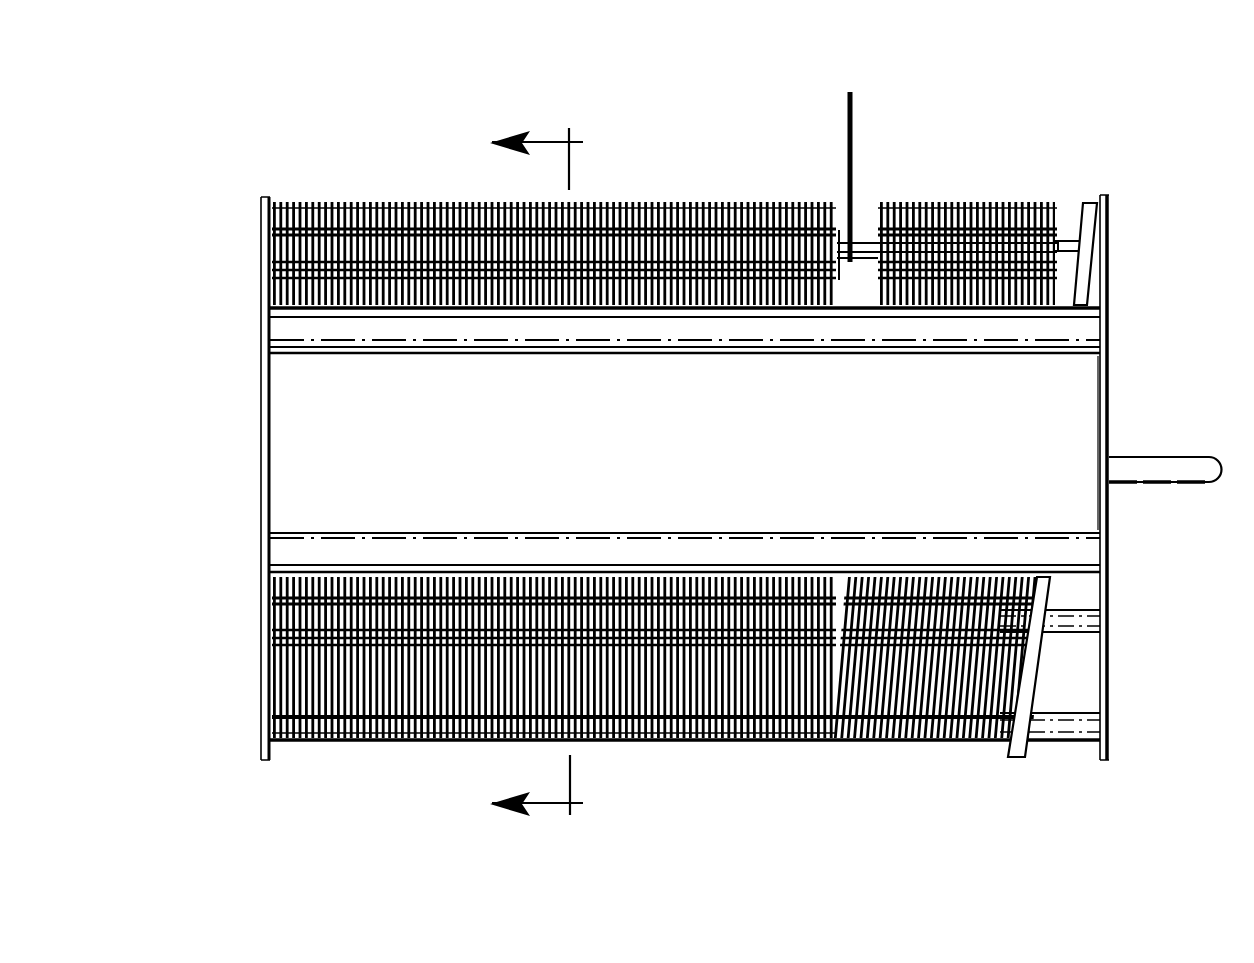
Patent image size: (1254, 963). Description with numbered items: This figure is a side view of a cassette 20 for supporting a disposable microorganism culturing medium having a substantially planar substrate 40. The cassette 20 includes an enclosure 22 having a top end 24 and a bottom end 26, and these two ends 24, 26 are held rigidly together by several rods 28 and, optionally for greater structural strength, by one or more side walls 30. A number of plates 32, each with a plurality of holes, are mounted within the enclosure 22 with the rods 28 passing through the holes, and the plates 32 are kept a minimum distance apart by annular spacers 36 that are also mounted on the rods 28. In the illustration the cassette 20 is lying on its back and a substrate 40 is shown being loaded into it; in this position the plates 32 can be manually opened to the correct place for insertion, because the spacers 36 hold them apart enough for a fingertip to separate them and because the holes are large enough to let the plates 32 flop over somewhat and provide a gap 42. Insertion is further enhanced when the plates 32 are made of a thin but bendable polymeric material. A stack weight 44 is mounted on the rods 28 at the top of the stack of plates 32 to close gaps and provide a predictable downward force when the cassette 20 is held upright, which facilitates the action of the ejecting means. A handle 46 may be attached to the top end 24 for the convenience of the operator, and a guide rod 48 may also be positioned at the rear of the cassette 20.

The cassette 20 is at (746, 58).
The enclosure 22 is at (1084, 395).
The top end 24 is at (1110, 590).
The bottom end 26 is at (262, 374).
The rods 28 is at (1067, 638).
The side wall 30 is at (1080, 502).
The plates 32 is at (1060, 210).
The annular spacers 36 is at (841, 212).
The substrate 40 is at (862, 97).
The gap 42 is at (868, 215).
The stack weight 44 is at (1088, 205).
The handle 46 is at (1160, 455).
The guide rod 48 is at (1060, 744).